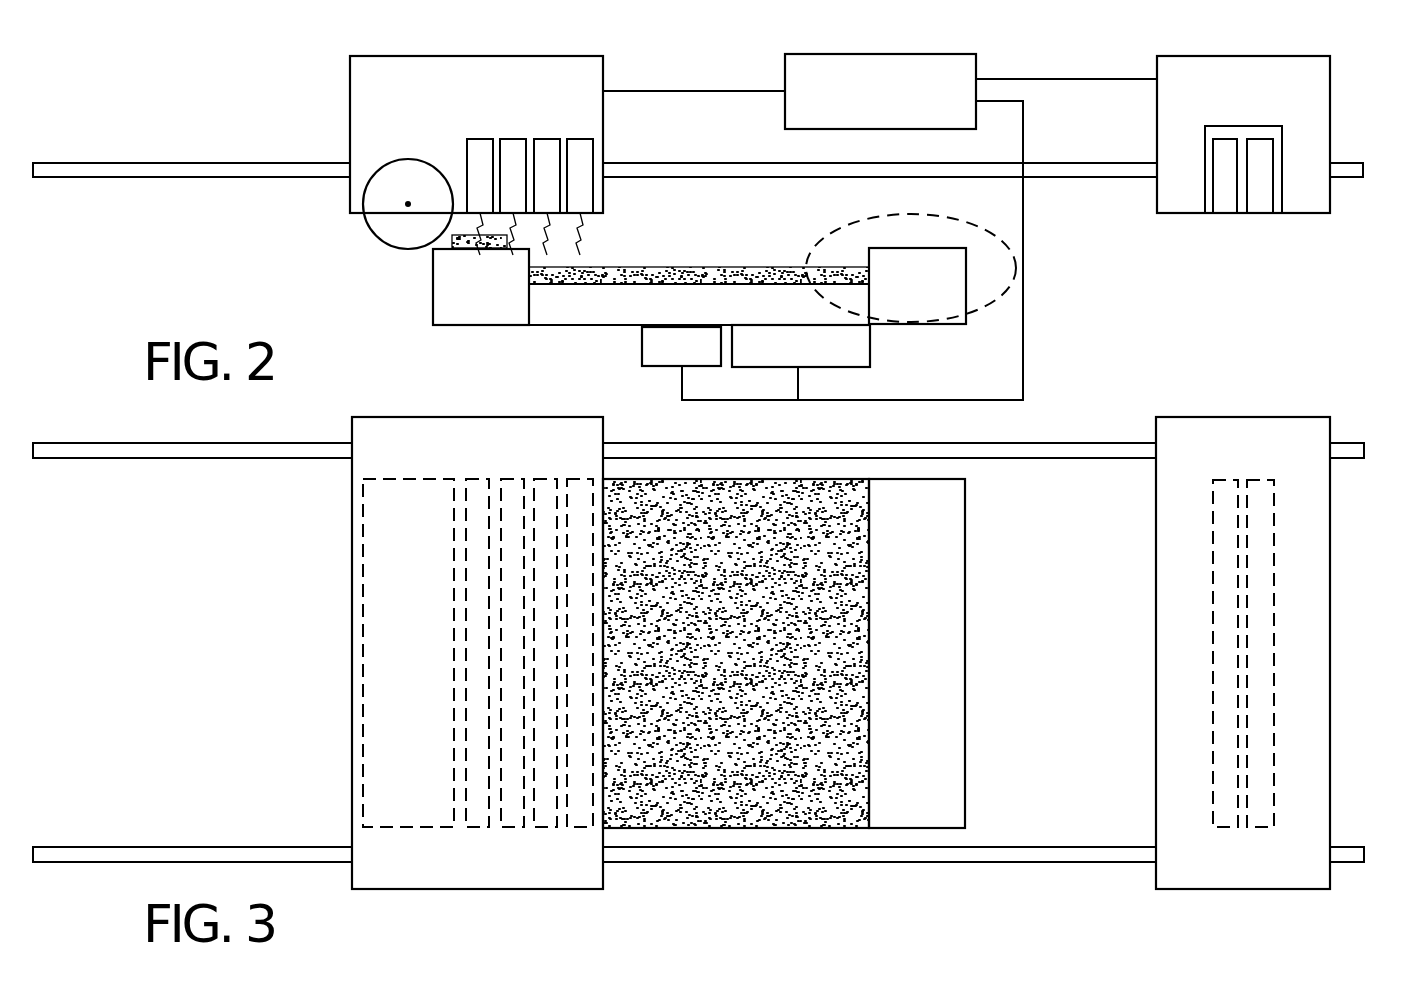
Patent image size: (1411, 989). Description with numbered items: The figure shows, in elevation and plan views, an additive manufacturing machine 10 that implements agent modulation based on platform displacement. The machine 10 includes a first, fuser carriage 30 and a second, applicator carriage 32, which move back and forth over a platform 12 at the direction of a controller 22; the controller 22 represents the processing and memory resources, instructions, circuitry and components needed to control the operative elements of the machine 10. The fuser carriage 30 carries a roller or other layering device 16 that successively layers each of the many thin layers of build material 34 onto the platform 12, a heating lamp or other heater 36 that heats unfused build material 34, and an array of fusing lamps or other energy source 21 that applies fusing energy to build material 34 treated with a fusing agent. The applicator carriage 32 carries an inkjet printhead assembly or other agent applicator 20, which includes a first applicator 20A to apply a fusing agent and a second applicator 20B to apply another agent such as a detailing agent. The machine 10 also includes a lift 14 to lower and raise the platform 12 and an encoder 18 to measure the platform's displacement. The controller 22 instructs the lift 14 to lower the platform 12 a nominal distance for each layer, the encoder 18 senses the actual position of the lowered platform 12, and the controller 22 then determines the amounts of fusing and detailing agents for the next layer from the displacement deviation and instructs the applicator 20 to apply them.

In FIG. 2, the additive manufacturing machine 10 is at (1325, 278).
In FIG. 3, the additive manufacturing machine 10 is at (1330, 365).
In FIG. 2, the platform 12 is at (547, 312).
In FIG. 3, the platform 12 is at (870, 652).
In FIG. 2, the lift 14 is at (647, 342).
In FIG. 2, the layering device 16 is at (378, 204).
In FIG. 3, the layering device 16 is at (398, 830).
In FIG. 2, the encoder 18 is at (863, 347).
In FIG. 2, the agent applicator 20 is at (1282, 156).
In FIG. 2, the first applicator 20A is at (1227, 207).
In FIG. 3, the first applicator 20A is at (1218, 830).
In FIG. 2, the second applicator 20B is at (1260, 207).
In FIG. 3, the second applicator 20B is at (1265, 830).
In FIG. 2, the energy source 21 is at (580, 139).
In FIG. 3, the energy source 21 is at (505, 830).
In FIG. 2, the controller 22 is at (806, 112).
In FIG. 2, the fuser carriage 30 is at (360, 92).
In FIG. 3, the fuser carriage 30 is at (393, 423).
In FIG. 2, the applicator carriage 32 is at (1320, 92).
In FIG. 3, the applicator carriage 32 is at (1320, 427).
In FIG. 2, the build material 34 is at (683, 265).
In FIG. 2, the heater 36 is at (480, 139).
In FIG. 3, the heater 36 is at (475, 830).